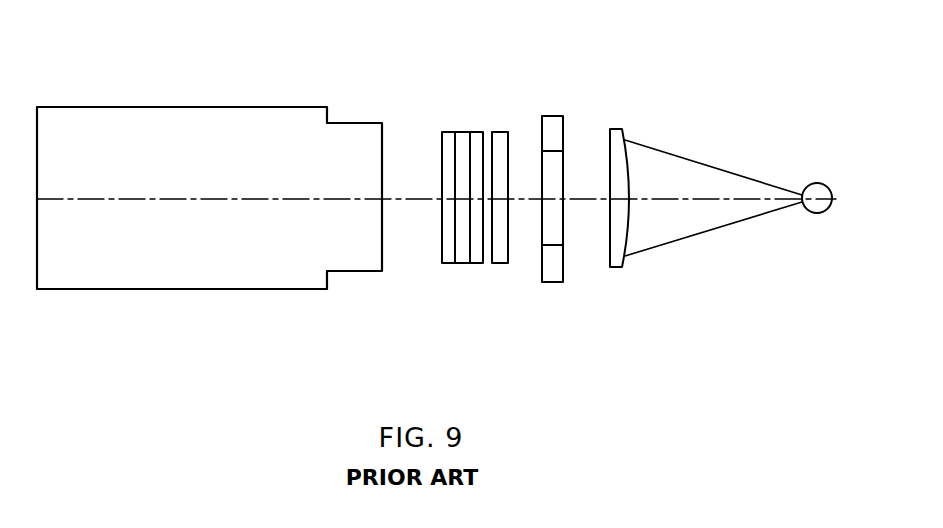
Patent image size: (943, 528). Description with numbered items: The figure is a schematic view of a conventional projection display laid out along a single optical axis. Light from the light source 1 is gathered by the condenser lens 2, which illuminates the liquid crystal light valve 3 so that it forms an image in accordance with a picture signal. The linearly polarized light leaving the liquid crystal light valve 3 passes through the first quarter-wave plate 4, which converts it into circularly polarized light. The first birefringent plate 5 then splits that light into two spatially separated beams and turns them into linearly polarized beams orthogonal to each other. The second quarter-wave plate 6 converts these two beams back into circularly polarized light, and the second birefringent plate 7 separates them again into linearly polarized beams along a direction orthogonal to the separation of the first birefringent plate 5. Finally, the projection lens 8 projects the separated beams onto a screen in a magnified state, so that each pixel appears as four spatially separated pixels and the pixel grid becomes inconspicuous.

The light source 1 is at (819, 183).
The condenser lens 2 is at (617, 129).
The liquid crystal light valve 3 is at (553, 116).
The first quarter-wave plate 4 is at (500, 263).
The first birefringent plate 5 is at (475, 131).
The second quarter-wave plate 6 is at (465, 131).
The second birefringent plate 7 is at (449, 131).
The projection lens 8 is at (247, 107).